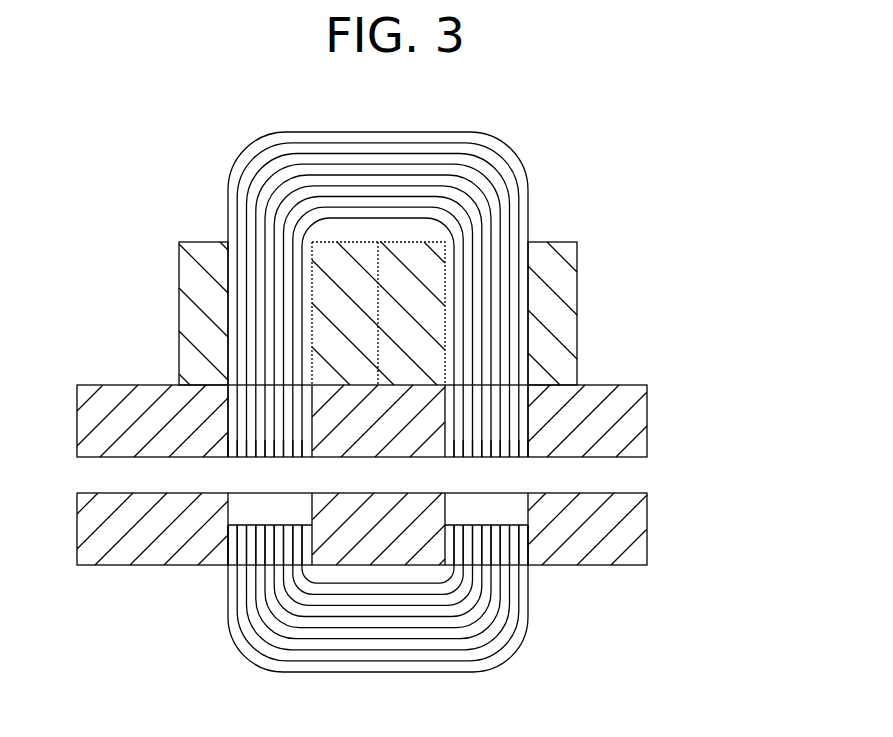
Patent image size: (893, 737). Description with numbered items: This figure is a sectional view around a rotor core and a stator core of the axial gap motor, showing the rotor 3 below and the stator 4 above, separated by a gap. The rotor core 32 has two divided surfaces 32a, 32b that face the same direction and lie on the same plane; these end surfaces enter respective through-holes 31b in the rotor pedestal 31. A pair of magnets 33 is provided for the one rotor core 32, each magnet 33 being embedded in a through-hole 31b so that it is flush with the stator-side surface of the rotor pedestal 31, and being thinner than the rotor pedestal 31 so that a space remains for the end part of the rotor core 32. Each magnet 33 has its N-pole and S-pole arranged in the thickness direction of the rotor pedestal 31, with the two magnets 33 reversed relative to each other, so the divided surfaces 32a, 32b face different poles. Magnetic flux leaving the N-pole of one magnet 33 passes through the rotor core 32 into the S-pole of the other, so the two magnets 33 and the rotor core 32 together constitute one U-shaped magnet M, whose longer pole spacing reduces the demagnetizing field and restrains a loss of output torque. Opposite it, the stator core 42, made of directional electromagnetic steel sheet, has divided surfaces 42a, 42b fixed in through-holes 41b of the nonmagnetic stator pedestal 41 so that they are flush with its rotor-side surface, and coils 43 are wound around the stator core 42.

The rotor 3 is at (707, 547).
The stator 4 is at (702, 377).
The rotor pedestal 31 is at (625, 519).
The through-hole 31b is at (308, 541).
The rotor core 32 is at (478, 672).
The divided surface 32a is at (200, 560).
The divided surface 32b is at (578, 566).
The magnet 33 is at (226, 507).
The stator pedestal 41 is at (625, 426).
The through-hole 41b is at (236, 420).
The stator core 42 is at (416, 142).
The divided surface 42a is at (247, 458).
The divided surface 42b is at (500, 458).
The coil 43 is at (205, 305).
The U-shaped magnet M is at (180, 619).